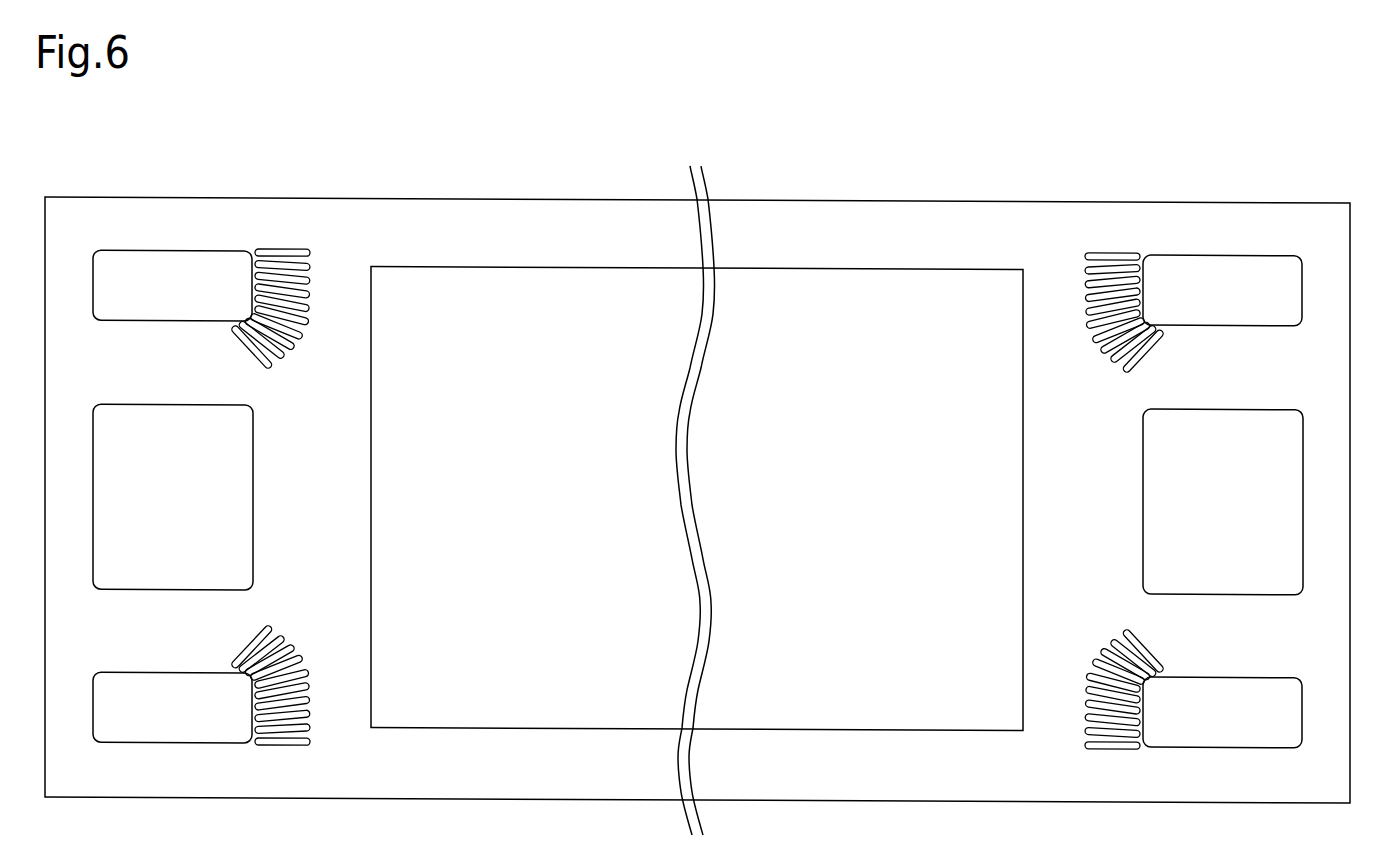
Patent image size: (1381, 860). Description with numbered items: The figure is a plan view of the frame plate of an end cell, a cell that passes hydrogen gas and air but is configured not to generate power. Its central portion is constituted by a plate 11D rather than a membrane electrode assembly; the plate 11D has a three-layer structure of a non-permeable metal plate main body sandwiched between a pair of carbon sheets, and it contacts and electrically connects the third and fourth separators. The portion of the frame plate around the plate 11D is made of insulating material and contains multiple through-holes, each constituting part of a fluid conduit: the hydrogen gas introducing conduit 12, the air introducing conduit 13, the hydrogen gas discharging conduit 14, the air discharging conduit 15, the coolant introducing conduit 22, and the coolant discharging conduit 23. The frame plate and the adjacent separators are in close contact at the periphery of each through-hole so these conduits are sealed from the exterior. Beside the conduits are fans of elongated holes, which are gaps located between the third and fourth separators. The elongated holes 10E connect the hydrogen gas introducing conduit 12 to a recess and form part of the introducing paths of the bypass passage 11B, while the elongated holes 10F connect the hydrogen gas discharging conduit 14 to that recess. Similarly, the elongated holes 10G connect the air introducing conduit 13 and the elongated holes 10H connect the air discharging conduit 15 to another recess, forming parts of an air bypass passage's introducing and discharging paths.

The bypass passage 11B is at (993, 223).
The plate 11D is at (822, 299).
The hydrogen gas introducing conduit 12 is at (156, 299).
The air introducing conduit 13 is at (1206, 299).
The hydrogen gas discharging conduit 14 is at (1206, 721).
The air discharging conduit 15 is at (156, 721).
The coolant introducing conduit 22 is at (156, 511).
The coolant discharging conduit 23 is at (1206, 511).
The elongated holes 10E is at (300, 358).
The elongated holes 10F is at (1095, 634).
The elongated holes 10G is at (1095, 358).
The elongated holes 10H is at (300, 634).